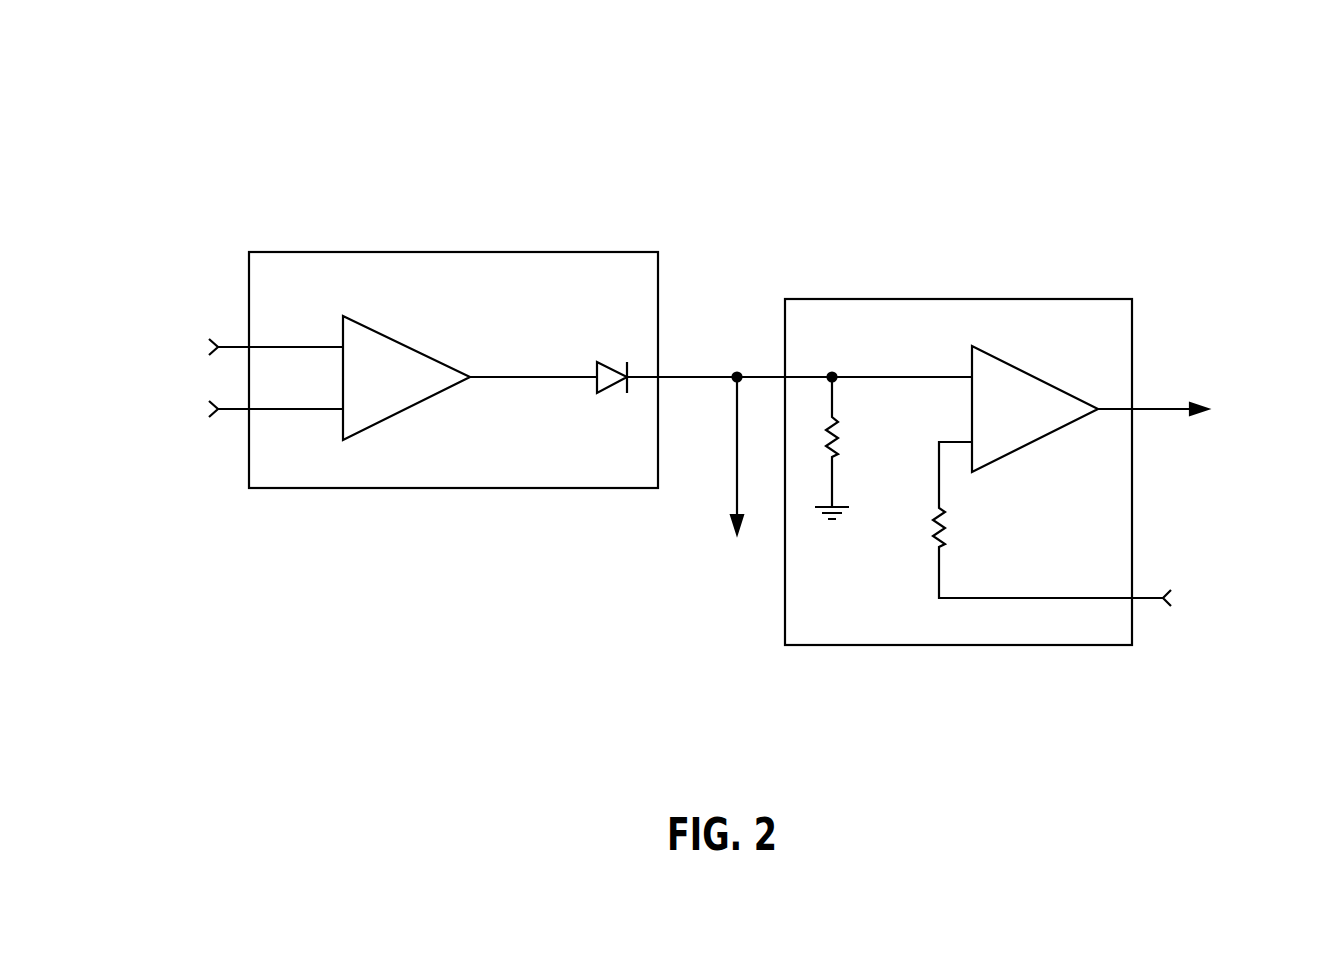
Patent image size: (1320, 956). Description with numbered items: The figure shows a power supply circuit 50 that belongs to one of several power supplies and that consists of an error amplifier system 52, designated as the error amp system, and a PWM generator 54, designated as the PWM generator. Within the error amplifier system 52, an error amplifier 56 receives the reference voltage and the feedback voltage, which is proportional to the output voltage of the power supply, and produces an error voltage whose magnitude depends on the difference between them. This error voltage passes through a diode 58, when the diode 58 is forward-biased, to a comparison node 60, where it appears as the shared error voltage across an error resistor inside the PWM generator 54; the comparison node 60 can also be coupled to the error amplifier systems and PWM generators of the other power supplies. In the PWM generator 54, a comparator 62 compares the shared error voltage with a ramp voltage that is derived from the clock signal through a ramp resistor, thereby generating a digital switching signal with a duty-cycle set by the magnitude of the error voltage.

The power supply circuit 50 is at (265, 110).
The error amplifier system 52 is at (628, 252).
The PWM generator 54 is at (1098, 299).
The error amplifier 56 is at (381, 333).
The diode 58 is at (597, 388).
The comparison node 60 is at (737, 450).
The comparator 62 is at (1035, 372).